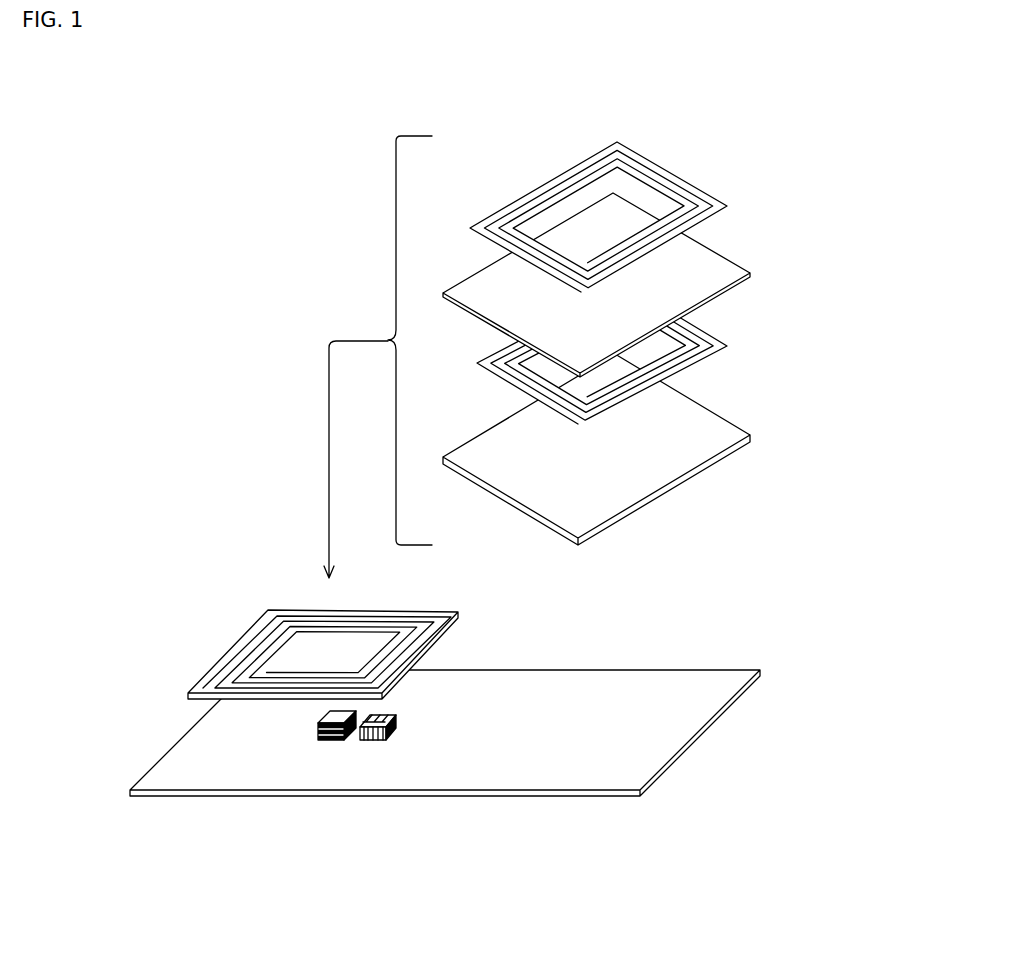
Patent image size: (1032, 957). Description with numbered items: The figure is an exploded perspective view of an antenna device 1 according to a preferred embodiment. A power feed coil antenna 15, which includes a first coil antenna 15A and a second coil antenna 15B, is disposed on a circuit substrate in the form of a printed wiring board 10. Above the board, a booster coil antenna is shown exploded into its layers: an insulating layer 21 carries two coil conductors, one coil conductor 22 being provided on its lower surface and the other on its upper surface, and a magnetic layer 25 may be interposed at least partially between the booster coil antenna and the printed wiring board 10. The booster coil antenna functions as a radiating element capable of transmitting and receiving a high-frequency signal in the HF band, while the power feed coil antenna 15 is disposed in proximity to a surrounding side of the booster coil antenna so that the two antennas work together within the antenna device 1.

The antenna device 1 is at (516, 96).
The printed wiring board 10 is at (586, 676).
The power feed coil antenna 15 is at (318, 740).
The first coil antenna 15A is at (397, 720).
The second coil antenna 15B is at (318, 727).
The insulating layer 21 is at (710, 249).
The coil conductor 22 is at (712, 338).
The magnetic layer 25 is at (710, 411).